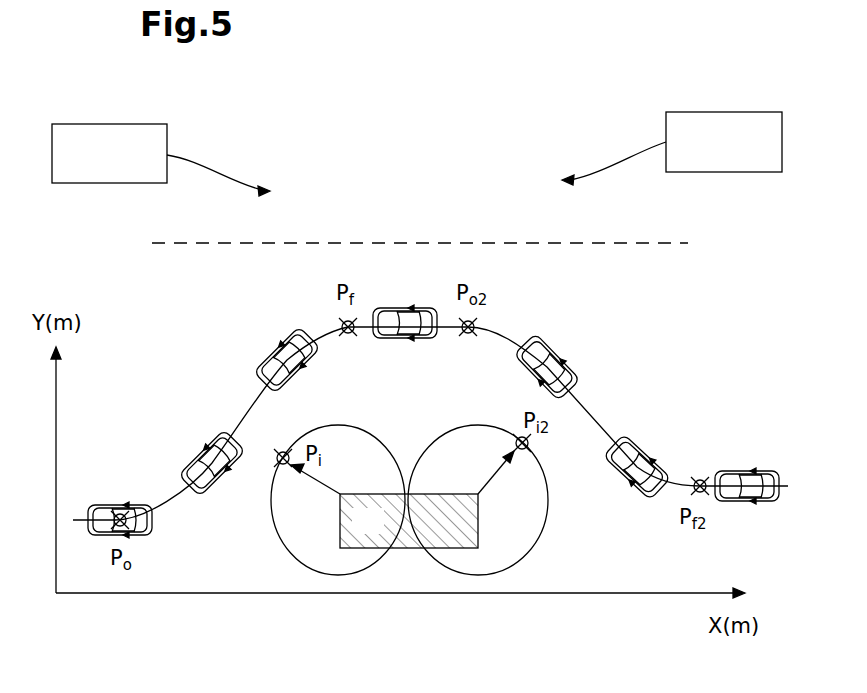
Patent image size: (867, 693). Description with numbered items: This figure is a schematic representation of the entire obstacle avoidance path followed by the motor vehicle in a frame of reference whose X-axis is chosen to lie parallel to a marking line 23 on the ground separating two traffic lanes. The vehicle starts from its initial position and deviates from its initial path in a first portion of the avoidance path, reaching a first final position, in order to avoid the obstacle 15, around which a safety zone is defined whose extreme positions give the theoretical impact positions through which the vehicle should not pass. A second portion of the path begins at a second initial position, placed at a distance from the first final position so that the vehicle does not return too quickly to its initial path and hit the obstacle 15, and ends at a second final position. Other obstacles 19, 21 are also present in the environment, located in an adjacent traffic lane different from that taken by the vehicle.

The other obstacle 19 is at (121, 167).
The other obstacle 21 is at (736, 155).
The marking line 23 is at (633, 242).
The obstacle 15 is at (380, 532).